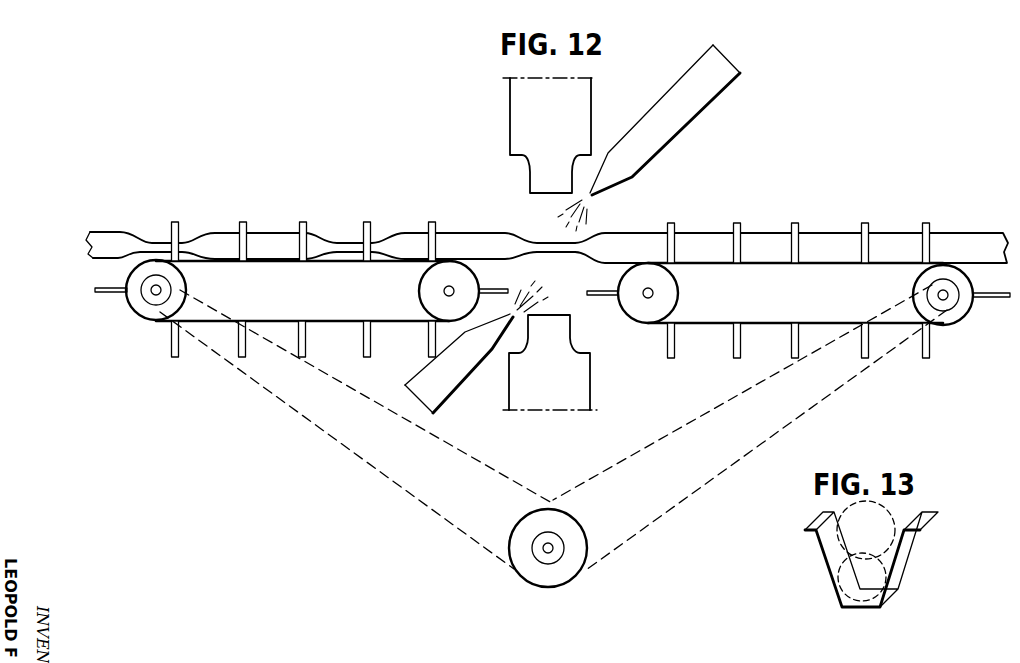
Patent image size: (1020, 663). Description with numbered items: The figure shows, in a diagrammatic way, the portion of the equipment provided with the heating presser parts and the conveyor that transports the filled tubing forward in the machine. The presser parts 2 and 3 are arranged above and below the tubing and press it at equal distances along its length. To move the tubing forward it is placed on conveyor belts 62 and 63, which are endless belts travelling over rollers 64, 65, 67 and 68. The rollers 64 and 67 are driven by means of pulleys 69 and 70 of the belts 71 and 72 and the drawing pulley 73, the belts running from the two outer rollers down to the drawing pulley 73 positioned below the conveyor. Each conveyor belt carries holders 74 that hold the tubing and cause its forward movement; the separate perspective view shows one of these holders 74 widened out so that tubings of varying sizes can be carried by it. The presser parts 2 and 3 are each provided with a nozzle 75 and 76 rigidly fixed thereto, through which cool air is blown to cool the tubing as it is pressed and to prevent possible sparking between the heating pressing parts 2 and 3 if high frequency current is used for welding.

In FIG. 12, the presser part 2 is at (535, 172).
In FIG. 12, the presser part 3 is at (570, 328).
In FIG. 12, the conveyor belt 62 is at (772, 265).
In FIG. 12, the conveyor belt 63 is at (352, 262).
In FIG. 12, the roller 64 is at (927, 277).
In FIG. 12, the roller 65 is at (673, 287).
In FIG. 12, the roller 67 is at (177, 279).
In FIG. 12, the roller 68 is at (428, 302).
In FIG. 12, the pulley 69 is at (146, 294).
In FIG. 12, the pulley 70 is at (950, 302).
In FIG. 12, the belt 71 is at (273, 395).
In FIG. 12, the belt 72 is at (808, 415).
In FIG. 12, the drawing pulley 73 is at (538, 522).
In FIG. 12, the holder 74 is at (738, 222).
In FIG. 13, the holder 74 is at (900, 572).
In FIG. 12, the nozzle 75 is at (659, 143).
In FIG. 12, the nozzle 76 is at (448, 388).